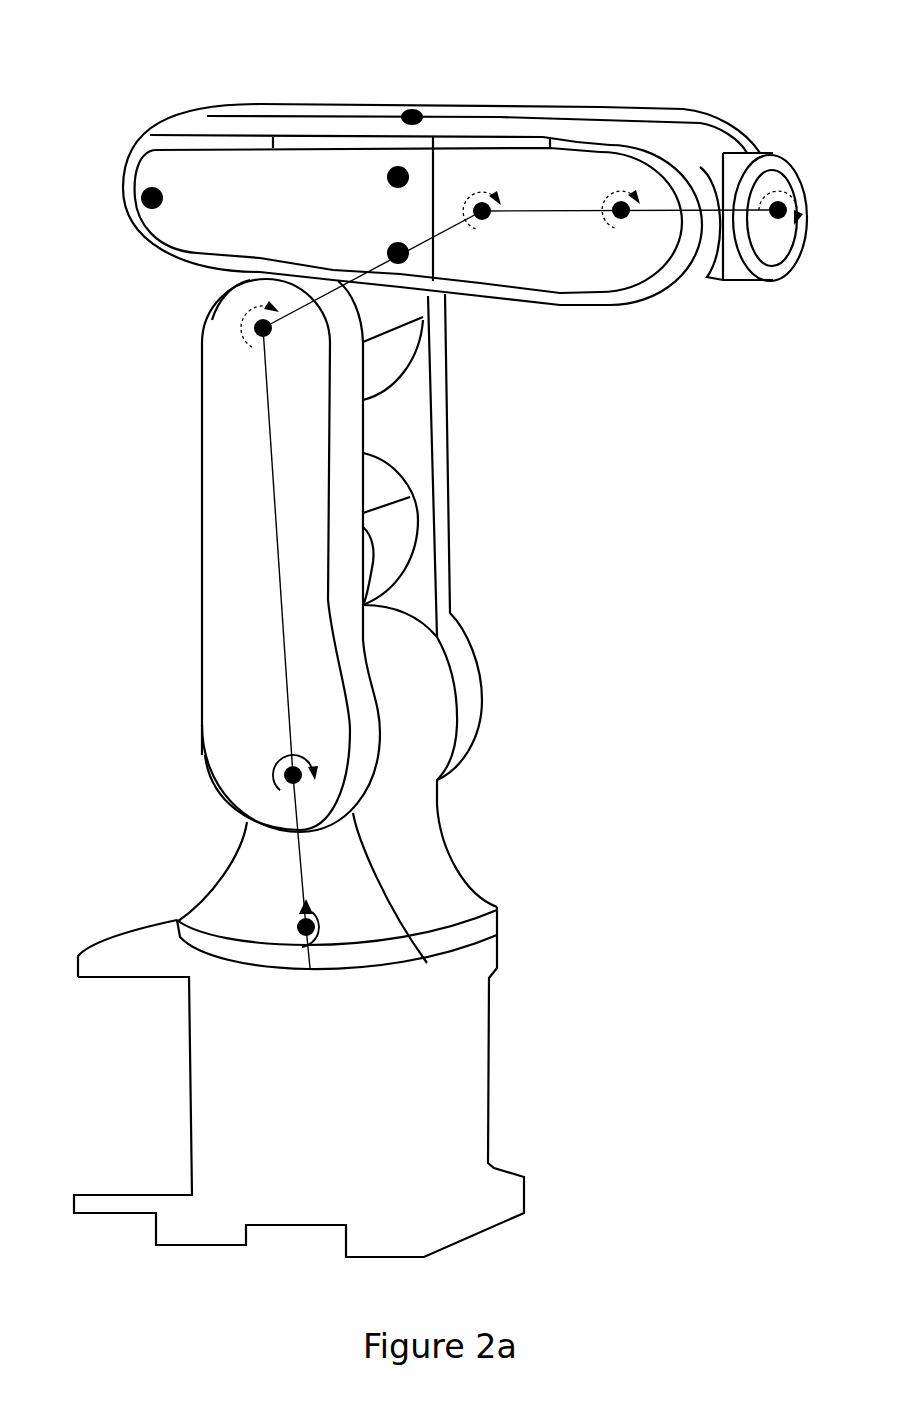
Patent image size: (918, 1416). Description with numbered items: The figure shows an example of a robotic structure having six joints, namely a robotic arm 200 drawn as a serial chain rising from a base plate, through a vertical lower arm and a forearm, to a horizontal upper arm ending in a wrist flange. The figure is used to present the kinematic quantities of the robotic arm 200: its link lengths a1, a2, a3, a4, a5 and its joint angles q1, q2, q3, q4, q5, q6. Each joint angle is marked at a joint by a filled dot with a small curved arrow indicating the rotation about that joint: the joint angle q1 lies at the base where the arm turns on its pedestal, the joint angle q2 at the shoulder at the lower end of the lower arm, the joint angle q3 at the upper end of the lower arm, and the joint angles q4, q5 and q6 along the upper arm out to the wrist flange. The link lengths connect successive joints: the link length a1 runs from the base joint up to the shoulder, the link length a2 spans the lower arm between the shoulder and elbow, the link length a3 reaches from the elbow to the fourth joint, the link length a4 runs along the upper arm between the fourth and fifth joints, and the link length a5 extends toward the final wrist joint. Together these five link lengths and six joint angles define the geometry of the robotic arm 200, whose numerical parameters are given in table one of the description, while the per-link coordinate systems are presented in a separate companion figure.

The robotic arm 200 is at (109, 82).
The link length a1 is at (274, 863).
The link length a2 is at (246, 565).
The link length a3 is at (374, 223).
The link length a4 is at (539, 165).
The link length a5 is at (698, 165).
The joint angle q1 is at (264, 921).
The joint angle q2 is at (246, 775).
The joint angle q3 is at (215, 329).
The joint angle q4 is at (464, 159).
The joint angle q5 is at (622, 166).
The joint angle q6 is at (782, 165).